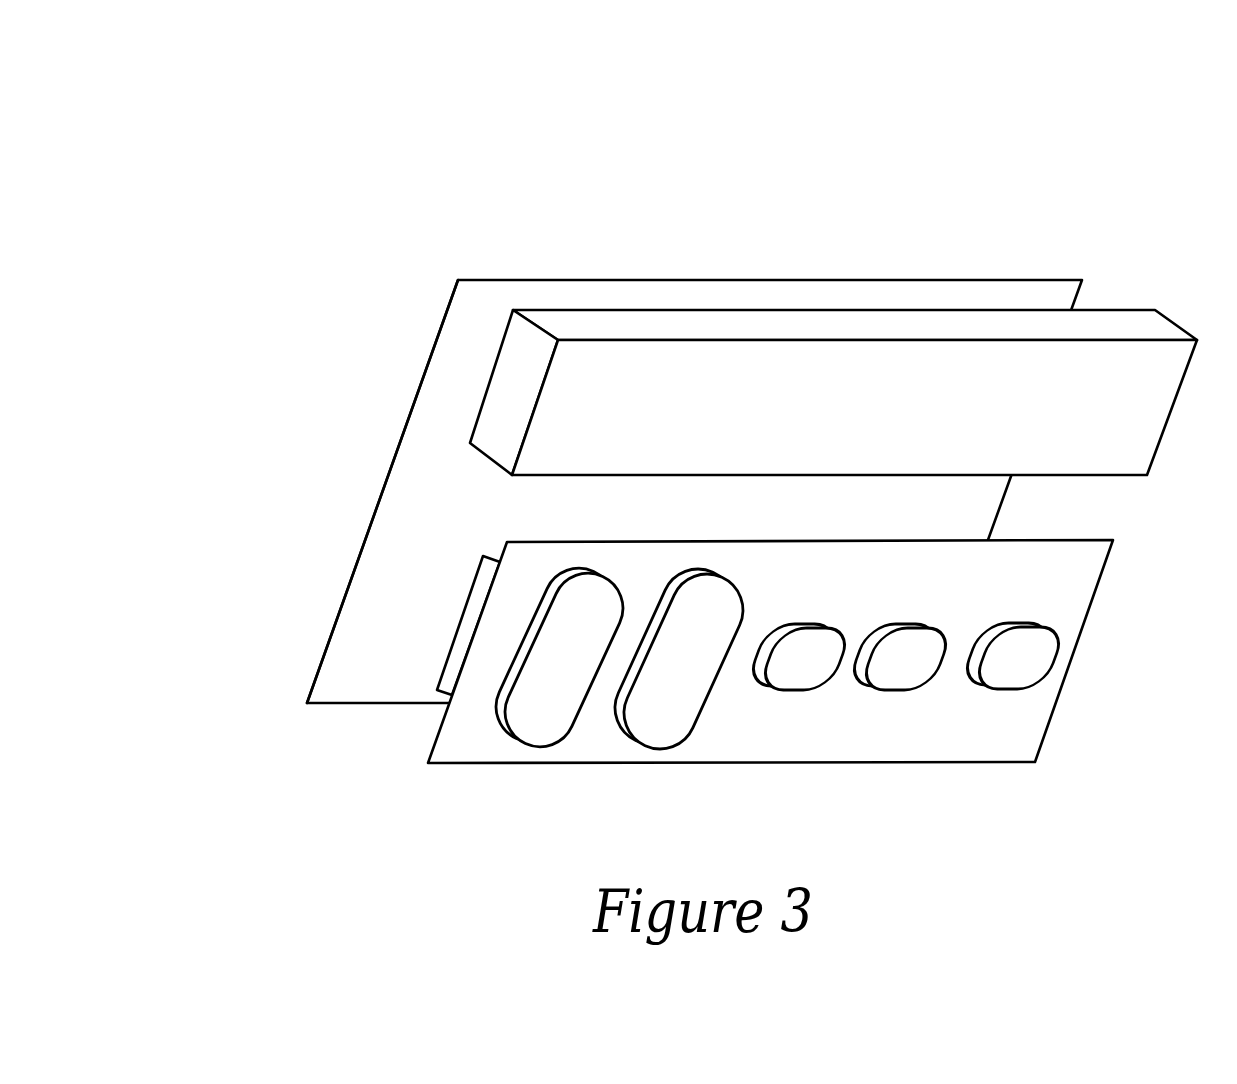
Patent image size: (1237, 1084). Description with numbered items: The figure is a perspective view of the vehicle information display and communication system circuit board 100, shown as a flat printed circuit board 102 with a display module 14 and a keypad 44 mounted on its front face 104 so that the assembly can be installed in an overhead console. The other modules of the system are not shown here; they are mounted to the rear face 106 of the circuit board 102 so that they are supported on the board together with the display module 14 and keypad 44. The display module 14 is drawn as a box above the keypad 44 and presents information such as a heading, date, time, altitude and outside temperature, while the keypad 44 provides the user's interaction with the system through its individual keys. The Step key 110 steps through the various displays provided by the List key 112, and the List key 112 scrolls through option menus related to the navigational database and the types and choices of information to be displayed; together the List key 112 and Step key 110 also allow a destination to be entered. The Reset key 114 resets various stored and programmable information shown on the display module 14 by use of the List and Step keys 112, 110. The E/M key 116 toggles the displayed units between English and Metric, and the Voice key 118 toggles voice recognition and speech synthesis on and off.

The vehicle information display and communication system circuit board 100 is at (326, 203).
The printed circuit board 102 is at (604, 276).
The rear face 106 is at (385, 475).
The display module 14 is at (493, 412).
The keypad 44 is at (460, 673).
The front face 104 is at (462, 536).
The Step key 110 is at (497, 733).
The List key 112 is at (615, 733).
The Reset key 114 is at (763, 692).
The E/M key 116 is at (870, 692).
The Voice key 118 is at (977, 695).